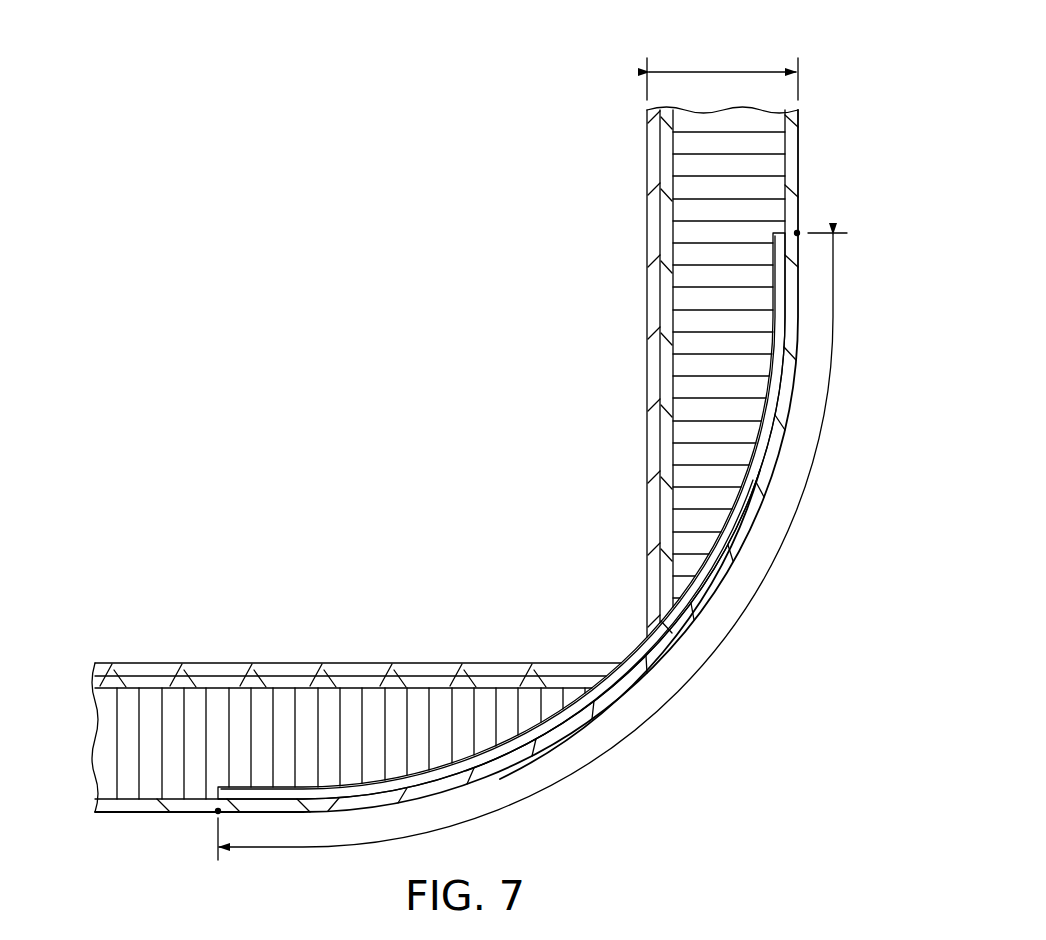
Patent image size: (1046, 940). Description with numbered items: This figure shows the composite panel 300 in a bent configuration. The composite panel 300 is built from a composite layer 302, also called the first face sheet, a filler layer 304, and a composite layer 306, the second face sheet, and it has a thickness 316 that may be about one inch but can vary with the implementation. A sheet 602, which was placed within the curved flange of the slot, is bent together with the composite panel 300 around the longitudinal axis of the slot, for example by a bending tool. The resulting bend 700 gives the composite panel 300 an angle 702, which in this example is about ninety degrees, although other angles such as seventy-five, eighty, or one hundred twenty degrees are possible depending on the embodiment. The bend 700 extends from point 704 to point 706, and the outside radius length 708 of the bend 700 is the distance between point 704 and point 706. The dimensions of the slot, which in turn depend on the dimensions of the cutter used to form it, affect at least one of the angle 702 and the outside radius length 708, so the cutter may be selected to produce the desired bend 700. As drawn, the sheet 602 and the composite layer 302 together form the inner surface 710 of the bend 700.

The composite panel 300 is at (398, 330).
The composite layer 302 is at (206, 658).
The filler layer 304 is at (93, 740).
The composite layer 306 is at (802, 137).
The thickness 316 is at (735, 70).
The sheet 602 is at (640, 647).
The bend 700 is at (746, 709).
The angle 702 is at (458, 645).
The point 704 is at (801, 232).
The point 706 is at (216, 814).
The outside radius length 708 is at (680, 694).
The inner surface 710 is at (586, 646).